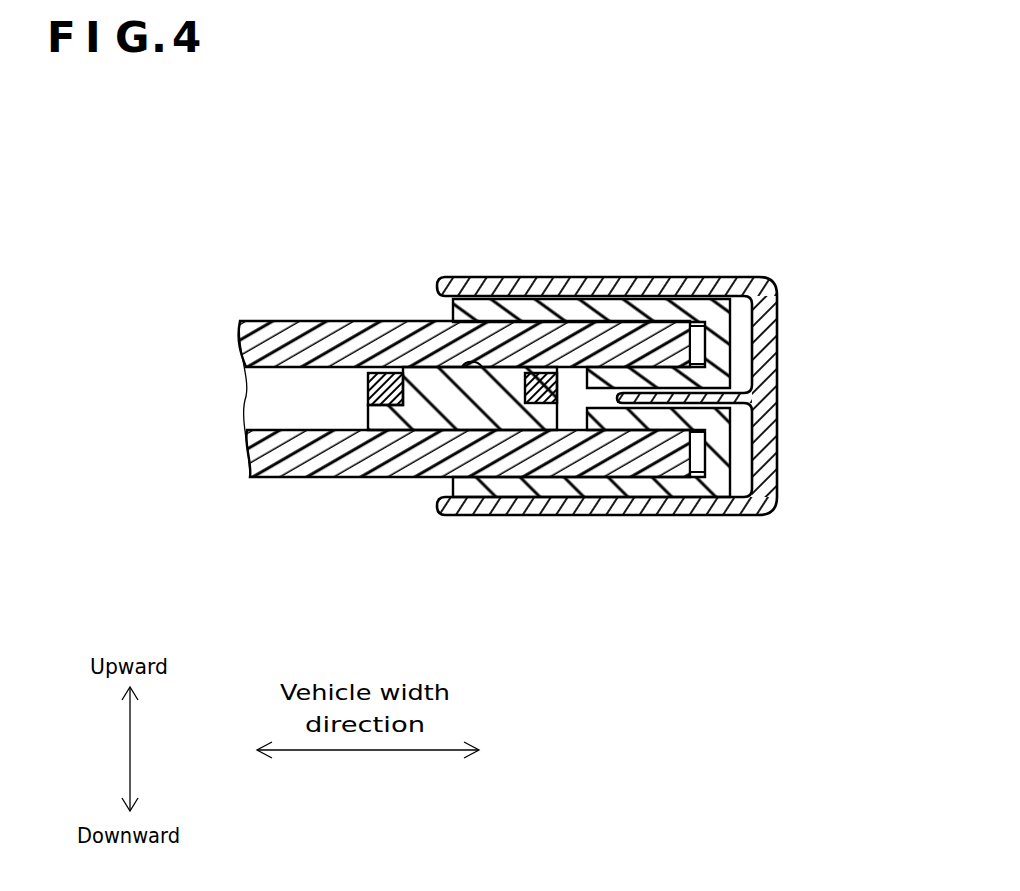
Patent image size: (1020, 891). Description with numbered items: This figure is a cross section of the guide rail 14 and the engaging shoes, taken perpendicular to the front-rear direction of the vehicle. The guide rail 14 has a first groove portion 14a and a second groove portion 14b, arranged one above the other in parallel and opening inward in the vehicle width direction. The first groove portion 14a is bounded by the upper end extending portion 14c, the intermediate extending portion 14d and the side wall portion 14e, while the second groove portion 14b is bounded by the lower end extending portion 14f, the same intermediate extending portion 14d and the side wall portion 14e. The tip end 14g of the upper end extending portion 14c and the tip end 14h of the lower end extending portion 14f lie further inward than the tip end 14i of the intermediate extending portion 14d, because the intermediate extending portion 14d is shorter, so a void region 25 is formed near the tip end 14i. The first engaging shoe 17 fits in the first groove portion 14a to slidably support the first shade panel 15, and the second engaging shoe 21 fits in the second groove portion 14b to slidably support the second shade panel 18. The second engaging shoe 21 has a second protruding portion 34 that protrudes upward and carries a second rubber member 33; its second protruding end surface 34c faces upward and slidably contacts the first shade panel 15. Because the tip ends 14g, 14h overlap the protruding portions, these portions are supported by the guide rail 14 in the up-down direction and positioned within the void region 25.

The guide rail 14 is at (764, 262).
The first groove portion 14a is at (742, 350).
The second groove portion 14b is at (740, 457).
The upper end extending portion 14c is at (588, 277).
The intermediate extending portion 14d is at (670, 398).
The side wall portion 14e is at (779, 406).
The lower end extending portion 14f is at (562, 505).
The tip end of the upper end extending portion 14g is at (447, 262).
The tip end of the lower end extending portion 14h is at (452, 517).
The tip end of the intermediate extending portion 14i is at (624, 407).
The first shade panel 15 is at (289, 332).
The first engaging shoe 17 is at (493, 312).
The second shade panel 18 is at (256, 444).
The second engaging shoe 21 is at (516, 487).
The void region 25 is at (566, 383).
The second rubber member 33 is at (372, 375).
The second protruding portion 34 is at (390, 375).
The second protruding end surface 34c is at (458, 365).